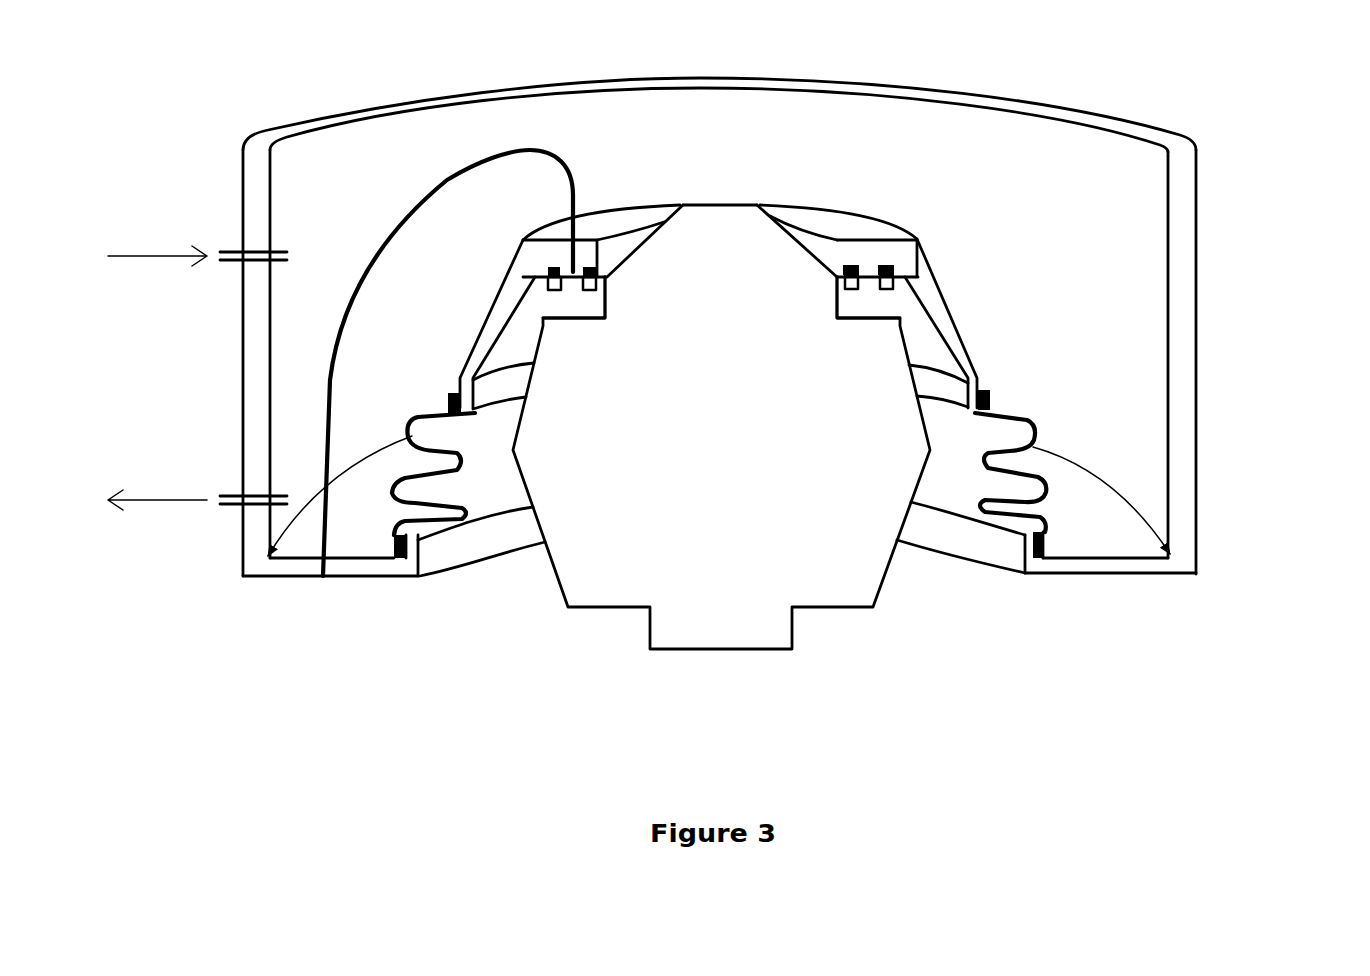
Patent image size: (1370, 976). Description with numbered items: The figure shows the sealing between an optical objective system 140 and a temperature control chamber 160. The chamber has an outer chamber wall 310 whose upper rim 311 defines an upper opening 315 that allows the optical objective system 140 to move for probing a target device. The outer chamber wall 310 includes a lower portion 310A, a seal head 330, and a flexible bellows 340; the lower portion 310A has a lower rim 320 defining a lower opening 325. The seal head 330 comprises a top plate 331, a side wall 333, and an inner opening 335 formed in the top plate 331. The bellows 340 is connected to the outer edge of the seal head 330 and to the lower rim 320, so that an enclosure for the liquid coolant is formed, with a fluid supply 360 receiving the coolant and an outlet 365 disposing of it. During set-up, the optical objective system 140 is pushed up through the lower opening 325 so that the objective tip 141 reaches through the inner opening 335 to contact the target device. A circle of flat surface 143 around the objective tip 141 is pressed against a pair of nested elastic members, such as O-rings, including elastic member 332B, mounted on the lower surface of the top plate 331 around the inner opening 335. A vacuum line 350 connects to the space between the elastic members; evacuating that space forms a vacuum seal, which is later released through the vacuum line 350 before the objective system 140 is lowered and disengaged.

The optical objective system 140 is at (748, 493).
The objective tip 141 is at (713, 217).
The flat surface 143 is at (891, 312).
The temperature control chamber 160 is at (1202, 346).
The outer chamber wall 310 is at (1185, 200).
The lower portion 310A is at (1127, 562).
The upper rim 311 is at (1132, 116).
The upper opening 315 is at (990, 140).
The lower rim 320 is at (1035, 567).
The lower opening 325 is at (959, 561).
The seal head 330 is at (963, 327).
The top plate 331 is at (867, 228).
The elastic member 332B is at (547, 270).
The side wall 333 is at (968, 343).
The inner opening 335 is at (807, 232).
The flexible bellows 340 is at (427, 418).
The vacuum line 350 is at (409, 202).
The fluid supply 360 is at (219, 245).
The outlet 365 is at (219, 494).